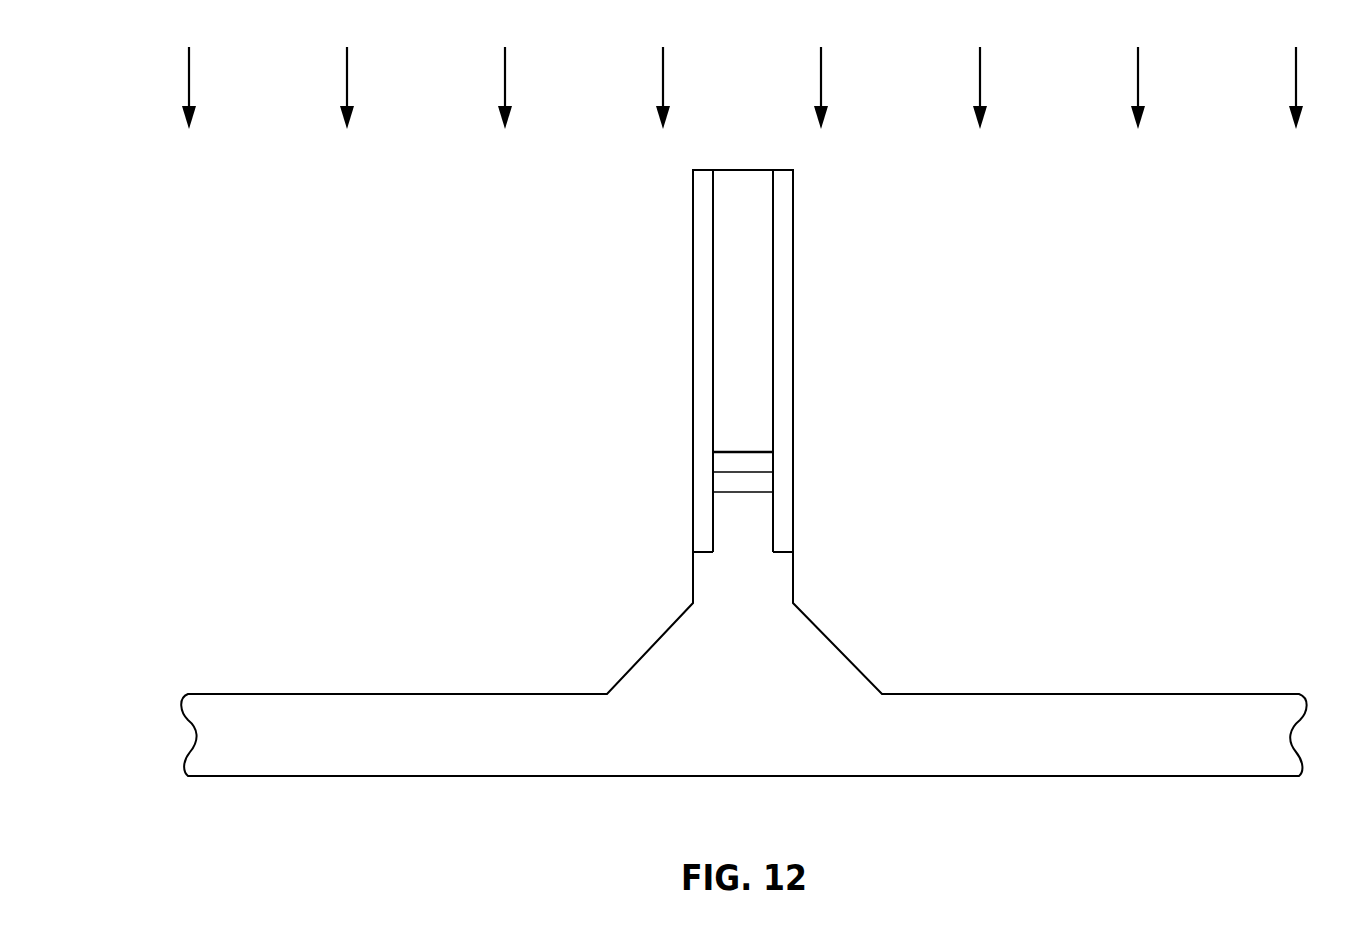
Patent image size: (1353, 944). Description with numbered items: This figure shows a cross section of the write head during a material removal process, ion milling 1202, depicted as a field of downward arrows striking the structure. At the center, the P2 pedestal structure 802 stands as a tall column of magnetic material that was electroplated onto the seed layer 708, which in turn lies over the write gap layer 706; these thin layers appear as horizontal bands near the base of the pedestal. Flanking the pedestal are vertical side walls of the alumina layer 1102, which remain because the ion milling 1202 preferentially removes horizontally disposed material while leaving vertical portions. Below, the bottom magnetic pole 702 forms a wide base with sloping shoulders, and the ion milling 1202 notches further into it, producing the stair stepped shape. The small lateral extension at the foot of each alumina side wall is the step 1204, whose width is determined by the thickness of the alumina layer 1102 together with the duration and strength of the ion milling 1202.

The bottom magnetic pole 702 is at (783, 675).
The write gap layer 706 is at (753, 483).
The seed layer 708 is at (758, 463).
The P2 pedestal structure 802 is at (753, 250).
The alumina layer 1102 is at (707, 305).
The ion milling 1202 is at (507, 72).
The step 1204 is at (705, 550).